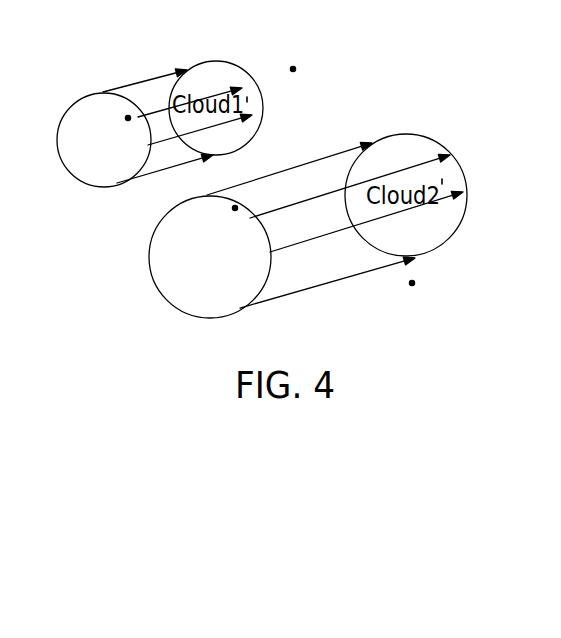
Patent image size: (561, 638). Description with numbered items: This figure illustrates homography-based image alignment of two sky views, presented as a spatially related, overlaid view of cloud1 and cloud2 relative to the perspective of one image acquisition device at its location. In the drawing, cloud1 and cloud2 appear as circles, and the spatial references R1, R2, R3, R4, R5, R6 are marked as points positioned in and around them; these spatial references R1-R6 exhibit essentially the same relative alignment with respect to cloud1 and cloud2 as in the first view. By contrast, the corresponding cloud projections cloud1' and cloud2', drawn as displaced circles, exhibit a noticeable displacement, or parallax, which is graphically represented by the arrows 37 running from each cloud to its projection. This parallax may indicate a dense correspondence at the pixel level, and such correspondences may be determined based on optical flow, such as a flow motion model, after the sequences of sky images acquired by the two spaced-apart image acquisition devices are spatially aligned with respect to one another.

The arrows 37 is at (150, 81).
The spatial reference R1 is at (91, 192).
The spatial reference R2 is at (128, 118).
The spatial reference R3 is at (296, 69).
The spatial reference R4 is at (168, 244).
The spatial reference R5 is at (237, 207).
The spatial reference R6 is at (415, 283).